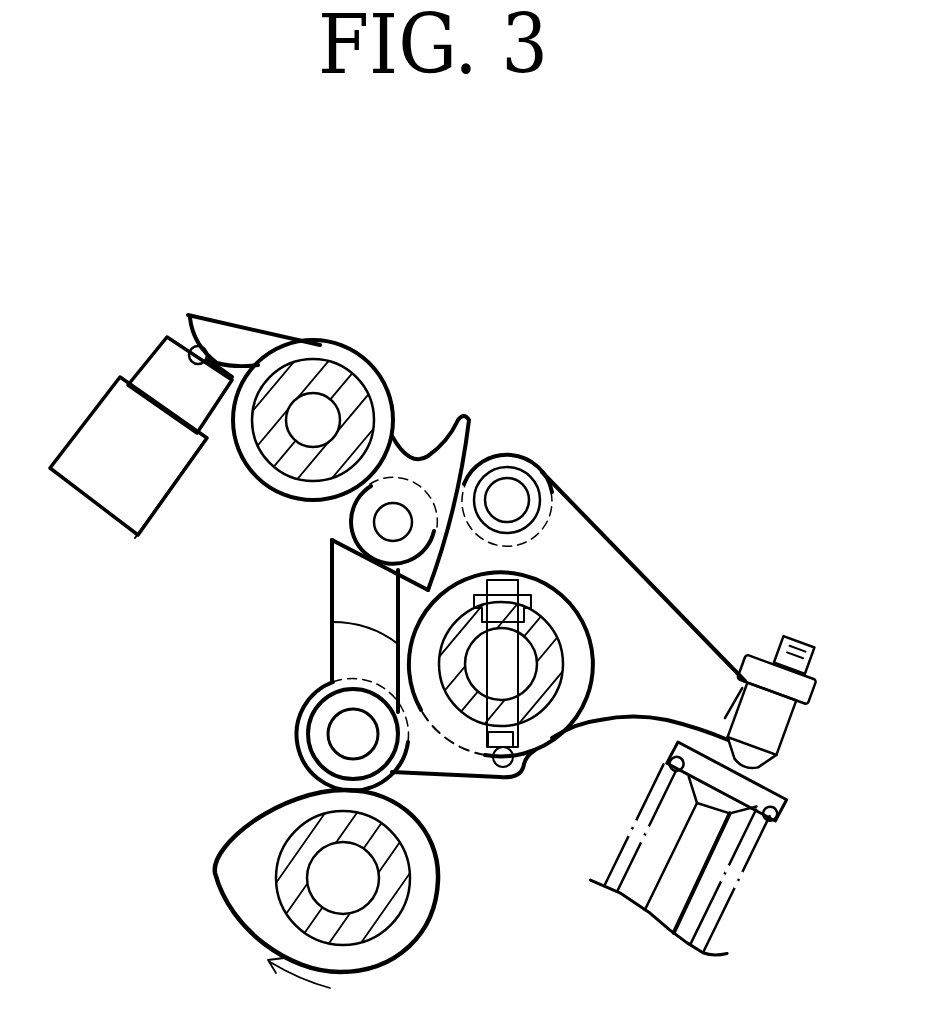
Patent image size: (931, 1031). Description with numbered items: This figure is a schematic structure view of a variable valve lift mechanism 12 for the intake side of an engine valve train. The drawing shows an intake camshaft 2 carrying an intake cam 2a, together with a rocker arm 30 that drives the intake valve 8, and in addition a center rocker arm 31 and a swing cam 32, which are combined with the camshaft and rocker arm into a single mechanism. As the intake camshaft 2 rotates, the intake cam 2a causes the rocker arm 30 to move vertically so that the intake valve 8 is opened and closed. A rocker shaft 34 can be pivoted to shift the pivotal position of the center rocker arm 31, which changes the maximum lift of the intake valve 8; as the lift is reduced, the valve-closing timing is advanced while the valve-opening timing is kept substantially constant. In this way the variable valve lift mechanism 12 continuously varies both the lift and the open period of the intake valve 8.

The variable valve lift mechanism 12 is at (603, 412).
The swing cam 32 is at (380, 366).
The center rocker arm 31 is at (330, 650).
The rocker arm 30 is at (653, 588).
The rocker shaft 34 is at (553, 627).
The intake camshaft 2 is at (305, 886).
The intake cam 2a is at (220, 852).
The intake valve 8 is at (663, 905).